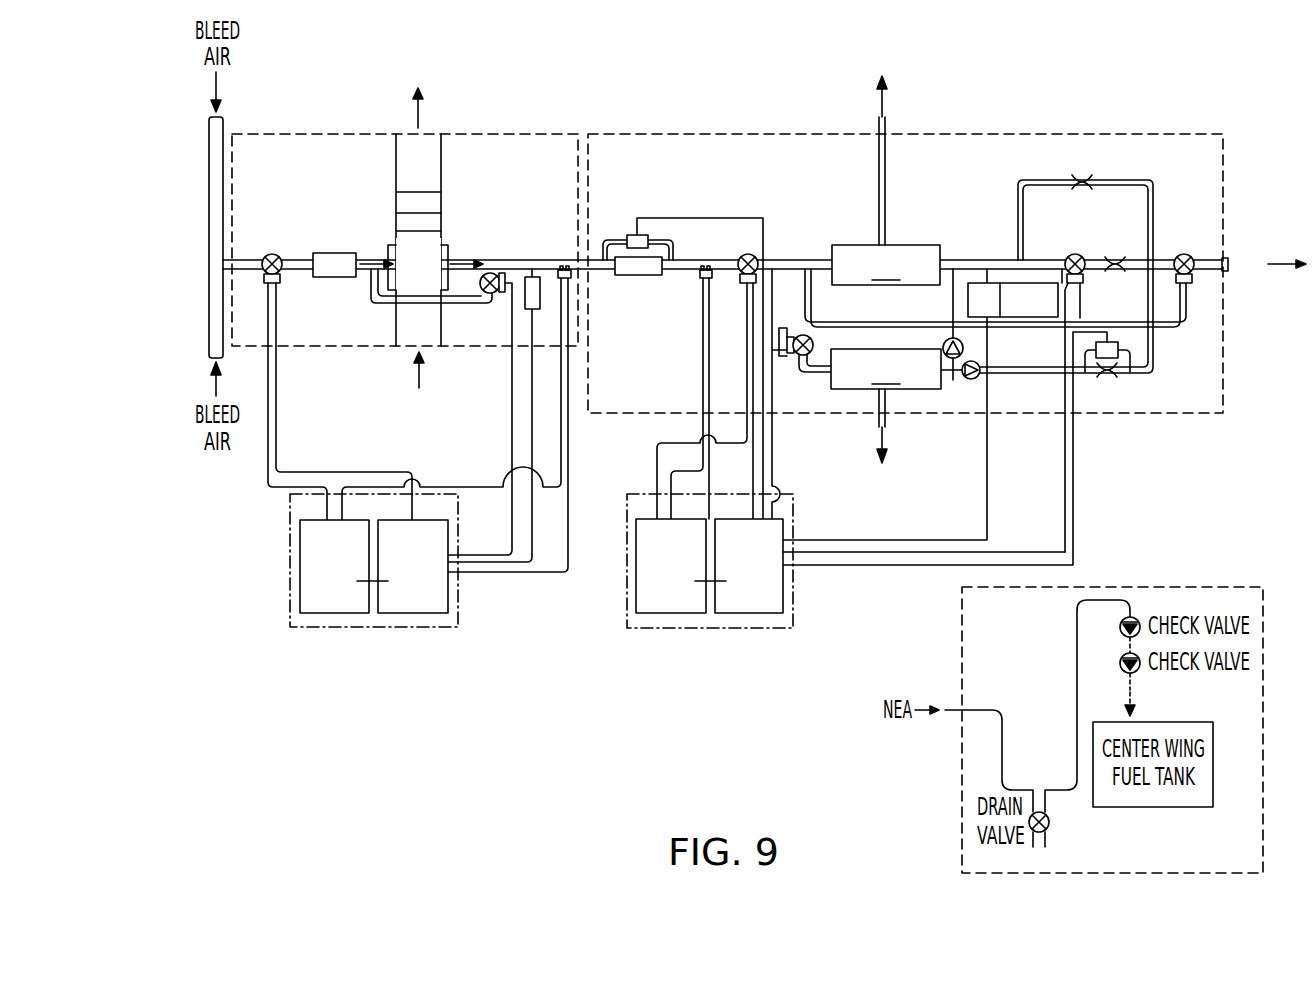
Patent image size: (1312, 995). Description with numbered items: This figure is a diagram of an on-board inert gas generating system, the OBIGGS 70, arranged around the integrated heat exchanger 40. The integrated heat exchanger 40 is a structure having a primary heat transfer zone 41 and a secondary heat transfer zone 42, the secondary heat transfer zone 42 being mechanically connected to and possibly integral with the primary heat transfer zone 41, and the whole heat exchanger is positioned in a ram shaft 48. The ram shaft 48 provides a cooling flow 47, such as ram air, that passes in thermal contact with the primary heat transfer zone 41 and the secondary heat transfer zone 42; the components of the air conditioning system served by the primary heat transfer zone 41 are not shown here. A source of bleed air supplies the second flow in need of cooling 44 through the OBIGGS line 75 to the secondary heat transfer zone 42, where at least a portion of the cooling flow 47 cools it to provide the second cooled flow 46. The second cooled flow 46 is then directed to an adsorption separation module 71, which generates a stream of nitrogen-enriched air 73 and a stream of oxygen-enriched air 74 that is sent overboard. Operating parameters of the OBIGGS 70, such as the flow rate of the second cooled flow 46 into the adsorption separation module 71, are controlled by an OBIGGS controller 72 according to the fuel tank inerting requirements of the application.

The OBIGGS 70 is at (145, 138).
The integrated heat exchanger 40 is at (360, 220).
The primary heat transfer zone 41 is at (400, 203).
The secondary heat transfer zone 42 is at (400, 233).
The second flow in need of cooling 44 is at (372, 258).
The second cooled flow 46 is at (464, 258).
The cooling flow 47 is at (420, 118).
The ram shaft 48 is at (441, 178).
The OBIGGS line 75 is at (297, 258).
The adsorption separation module 71 is at (886, 317).
The OBIGGS controller 72 is at (541, 561).
The stream of nitrogen-enriched air 73 is at (1280, 270).
The stream of oxygen-enriched air 74 is at (885, 108).